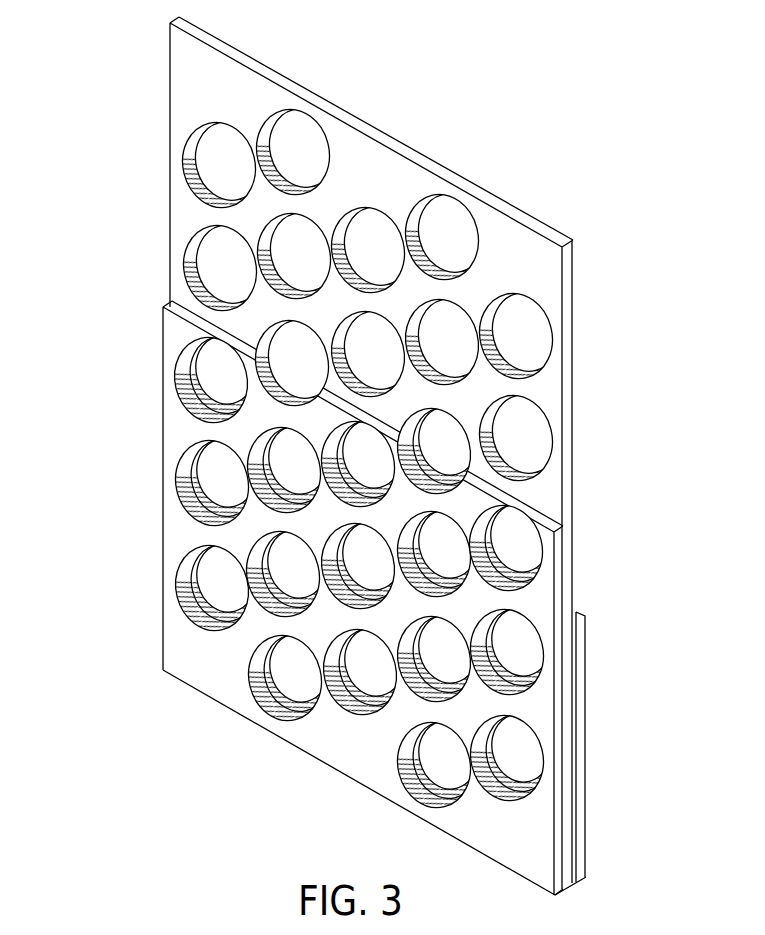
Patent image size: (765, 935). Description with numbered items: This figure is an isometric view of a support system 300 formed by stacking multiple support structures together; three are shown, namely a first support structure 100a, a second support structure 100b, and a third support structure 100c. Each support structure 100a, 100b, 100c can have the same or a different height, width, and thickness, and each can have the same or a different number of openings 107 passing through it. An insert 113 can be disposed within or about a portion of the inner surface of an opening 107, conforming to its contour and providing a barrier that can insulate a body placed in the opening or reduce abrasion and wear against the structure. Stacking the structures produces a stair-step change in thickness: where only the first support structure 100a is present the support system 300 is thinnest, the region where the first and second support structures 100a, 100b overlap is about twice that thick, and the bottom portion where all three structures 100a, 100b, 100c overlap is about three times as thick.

The first support structure 100a is at (404, 150).
The second support structure 100b is at (162, 333).
The third support structure 100c is at (585, 643).
The openings 107 is at (220, 372).
The insert 113 is at (510, 360).
The support system 300 is at (377, 456).